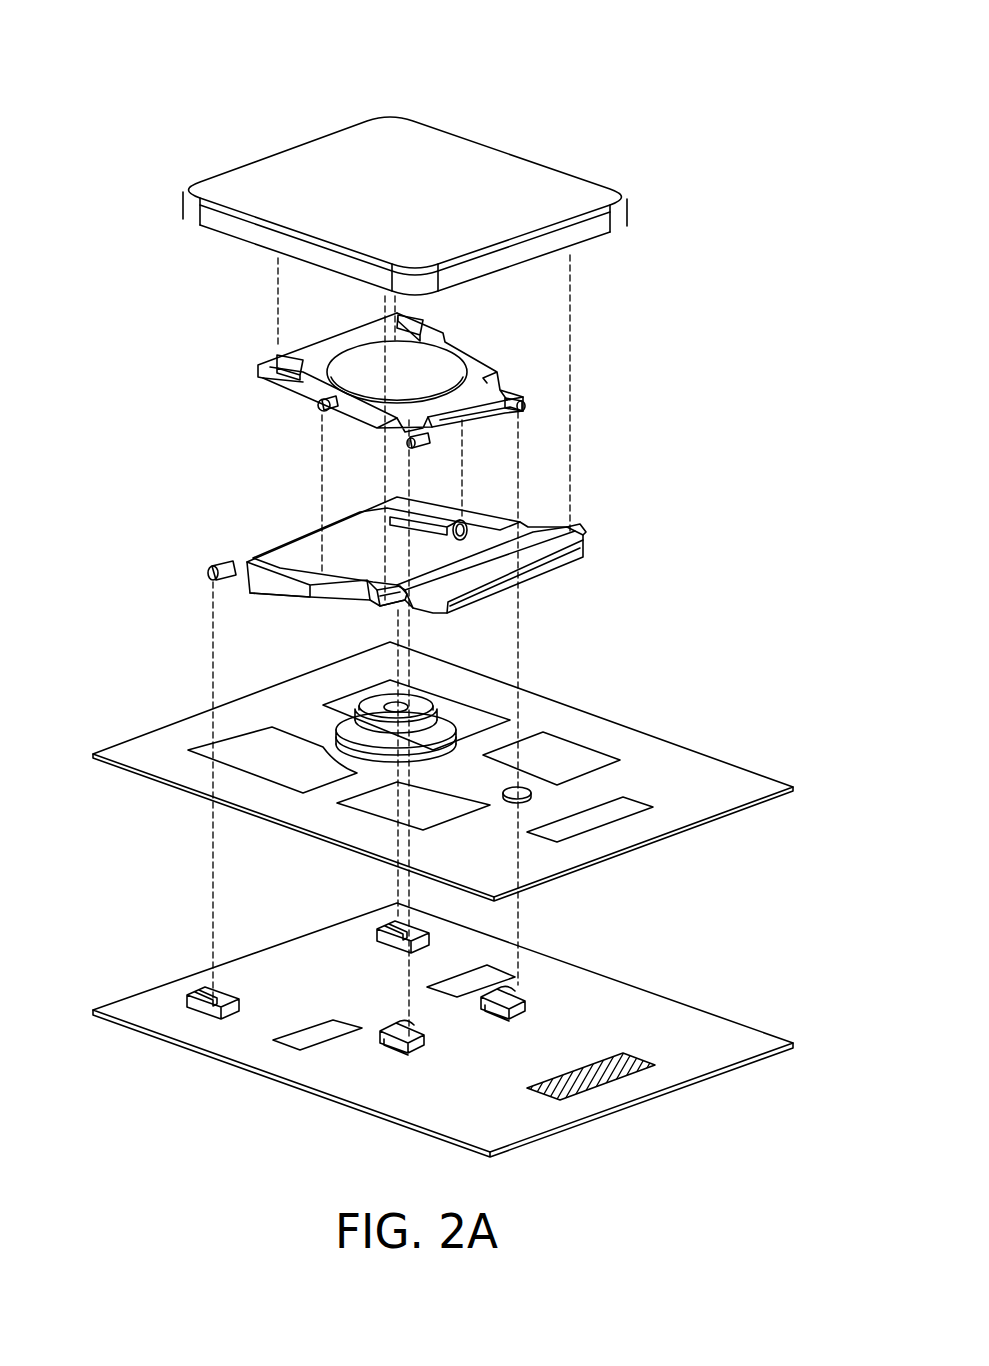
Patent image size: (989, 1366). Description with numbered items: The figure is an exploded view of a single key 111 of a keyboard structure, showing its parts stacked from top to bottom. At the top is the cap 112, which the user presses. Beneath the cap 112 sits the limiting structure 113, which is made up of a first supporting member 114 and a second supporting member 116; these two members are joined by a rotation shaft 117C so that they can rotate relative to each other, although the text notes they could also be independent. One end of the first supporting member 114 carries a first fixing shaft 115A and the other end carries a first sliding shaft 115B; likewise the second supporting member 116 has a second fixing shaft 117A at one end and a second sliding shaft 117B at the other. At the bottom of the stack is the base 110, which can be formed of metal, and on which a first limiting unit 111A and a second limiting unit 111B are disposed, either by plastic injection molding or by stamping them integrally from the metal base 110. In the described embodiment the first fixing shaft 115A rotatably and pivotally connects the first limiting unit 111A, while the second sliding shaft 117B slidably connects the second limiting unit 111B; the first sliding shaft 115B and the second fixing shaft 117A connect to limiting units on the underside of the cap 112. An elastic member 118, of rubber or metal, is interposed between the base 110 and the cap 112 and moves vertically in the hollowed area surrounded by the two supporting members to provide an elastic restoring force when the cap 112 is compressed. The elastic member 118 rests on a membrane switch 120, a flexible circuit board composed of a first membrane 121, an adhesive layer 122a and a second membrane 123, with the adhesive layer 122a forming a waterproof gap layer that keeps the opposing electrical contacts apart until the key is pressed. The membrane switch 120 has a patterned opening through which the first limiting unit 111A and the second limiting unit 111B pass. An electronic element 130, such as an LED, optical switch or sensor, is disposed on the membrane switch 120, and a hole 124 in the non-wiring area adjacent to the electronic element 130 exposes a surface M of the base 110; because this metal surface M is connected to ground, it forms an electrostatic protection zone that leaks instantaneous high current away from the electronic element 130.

The key 111 is at (79, 35).
The cap 112 is at (610, 233).
The limiting structure 113 is at (728, 322).
The first supporting member 114 is at (418, 560).
The first fixing shaft 115A is at (210, 570).
The first sliding shaft 115B is at (584, 533).
The second supporting member 116 is at (451, 374).
The second fixing shaft 117A is at (388, 322).
The second sliding shaft 117B is at (527, 406).
The rotation shaft 117C is at (318, 409).
The elastic member 118 is at (437, 730).
The membrane switch 120 is at (471, 771).
The first membrane 121 is at (668, 755).
The adhesive layer 122a is at (695, 817).
The second membrane 123 is at (720, 818).
The hole 124 is at (625, 806).
The electronic element 130 is at (531, 800).
The base 110 is at (441, 1024).
The first limiting unit 111A is at (380, 930).
The second limiting unit 111B is at (525, 990).
The surface M is at (640, 1057).